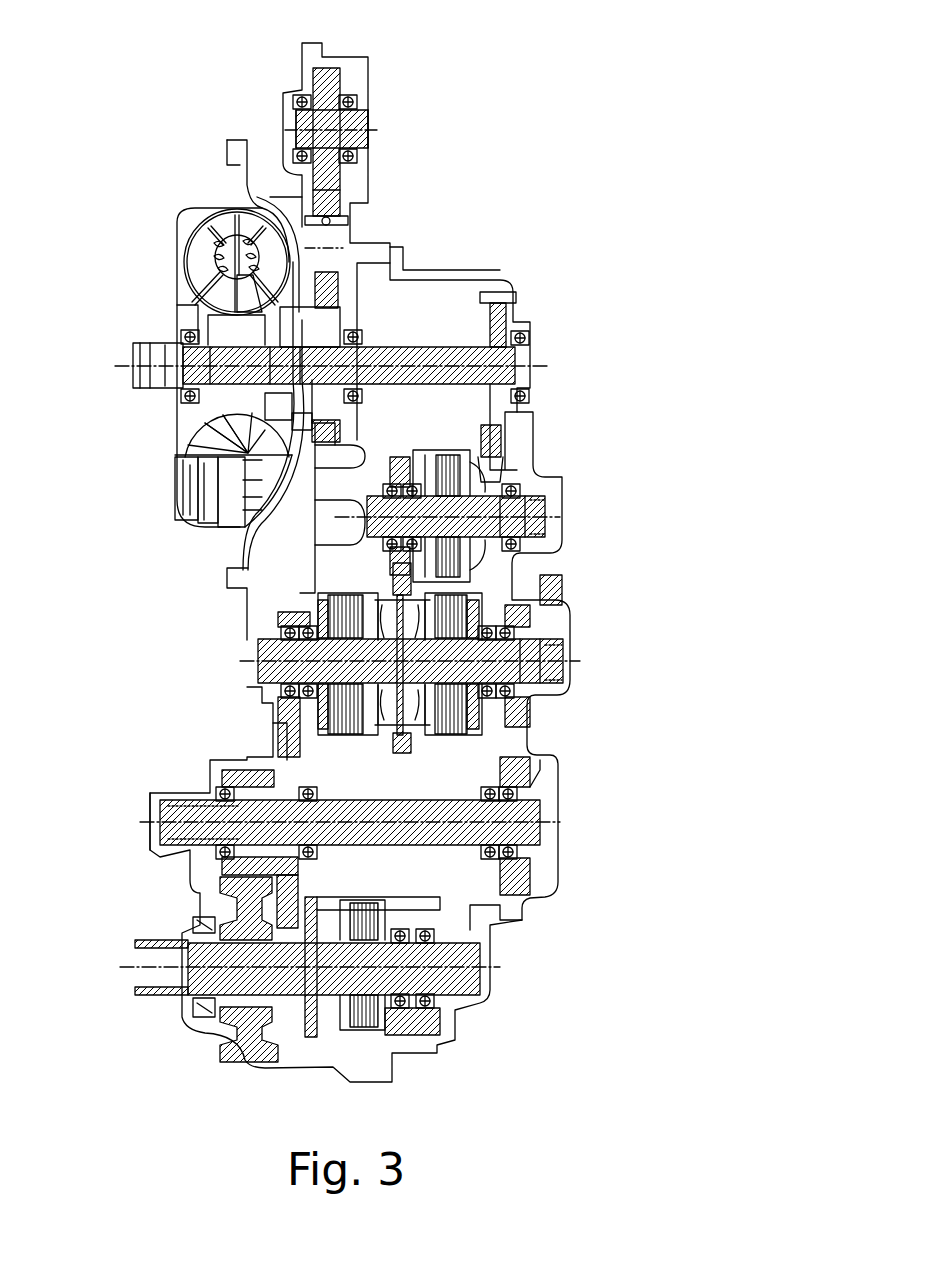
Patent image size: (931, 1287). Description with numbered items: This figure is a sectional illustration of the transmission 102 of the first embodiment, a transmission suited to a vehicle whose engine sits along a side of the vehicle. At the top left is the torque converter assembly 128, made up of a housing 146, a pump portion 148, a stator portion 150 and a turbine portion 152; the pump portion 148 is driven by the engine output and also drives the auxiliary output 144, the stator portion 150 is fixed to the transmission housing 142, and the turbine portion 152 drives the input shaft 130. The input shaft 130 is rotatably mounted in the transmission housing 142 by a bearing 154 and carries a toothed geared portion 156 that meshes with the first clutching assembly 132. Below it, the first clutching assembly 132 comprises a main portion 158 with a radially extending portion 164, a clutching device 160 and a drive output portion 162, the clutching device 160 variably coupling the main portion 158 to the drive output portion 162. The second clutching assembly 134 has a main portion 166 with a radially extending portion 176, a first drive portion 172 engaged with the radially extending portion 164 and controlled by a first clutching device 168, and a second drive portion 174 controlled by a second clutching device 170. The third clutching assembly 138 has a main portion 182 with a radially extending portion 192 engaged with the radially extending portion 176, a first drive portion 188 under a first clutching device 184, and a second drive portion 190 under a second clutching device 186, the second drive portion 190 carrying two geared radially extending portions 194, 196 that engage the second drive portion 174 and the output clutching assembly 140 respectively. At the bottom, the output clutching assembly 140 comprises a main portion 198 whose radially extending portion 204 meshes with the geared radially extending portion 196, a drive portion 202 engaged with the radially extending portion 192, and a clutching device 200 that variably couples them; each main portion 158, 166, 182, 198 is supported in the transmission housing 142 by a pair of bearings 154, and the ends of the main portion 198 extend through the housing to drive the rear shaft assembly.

The transmission 102 is at (492, 192).
The torque converter assembly 128 is at (162, 182).
The input shaft 130 is at (435, 348).
The first clutching assembly 132 is at (528, 420).
The second clutching assembly 134 is at (532, 592).
The third clutching assembly 138 is at (520, 876).
The output clutching assembly 140 is at (165, 917).
The transmission housing 142 is at (527, 905).
The auxiliary output 144 is at (335, 133).
The housing 146 is at (178, 515).
The pump portion 148 is at (247, 218).
The stator portion 150 is at (215, 292).
The turbine portion 152 is at (192, 245).
The bearing 154 is at (522, 336).
The geared portion 156 is at (505, 295).
The main portion 158 is at (350, 520).
The clutching device 160 is at (428, 467).
The drive output portion 162 is at (395, 572).
The radially extending portion 164 is at (505, 440).
The main portion 166 is at (472, 703).
The first clutching device 168 is at (492, 727).
The second clutching device 170 is at (280, 705).
The first drive portion 172 is at (507, 622).
The second drive portion 174 is at (252, 603).
The radially extending portion 176 is at (312, 703).
The main portion 182 is at (228, 840).
The first clutching device 184 is at (545, 820).
The second clutching device 186 is at (188, 797).
The first drive portion 188 is at (540, 760).
The second drive portion 190 is at (242, 752).
The radially extending portion 192 is at (425, 897).
The geared radially extending portion 194 is at (268, 750).
The geared radially extending portion 196 is at (203, 772).
The main portion 198 is at (285, 1030).
The clutching device 200 is at (362, 1025).
The drive portion 202 is at (402, 1045).
The radially extending portion 204 is at (238, 1045).